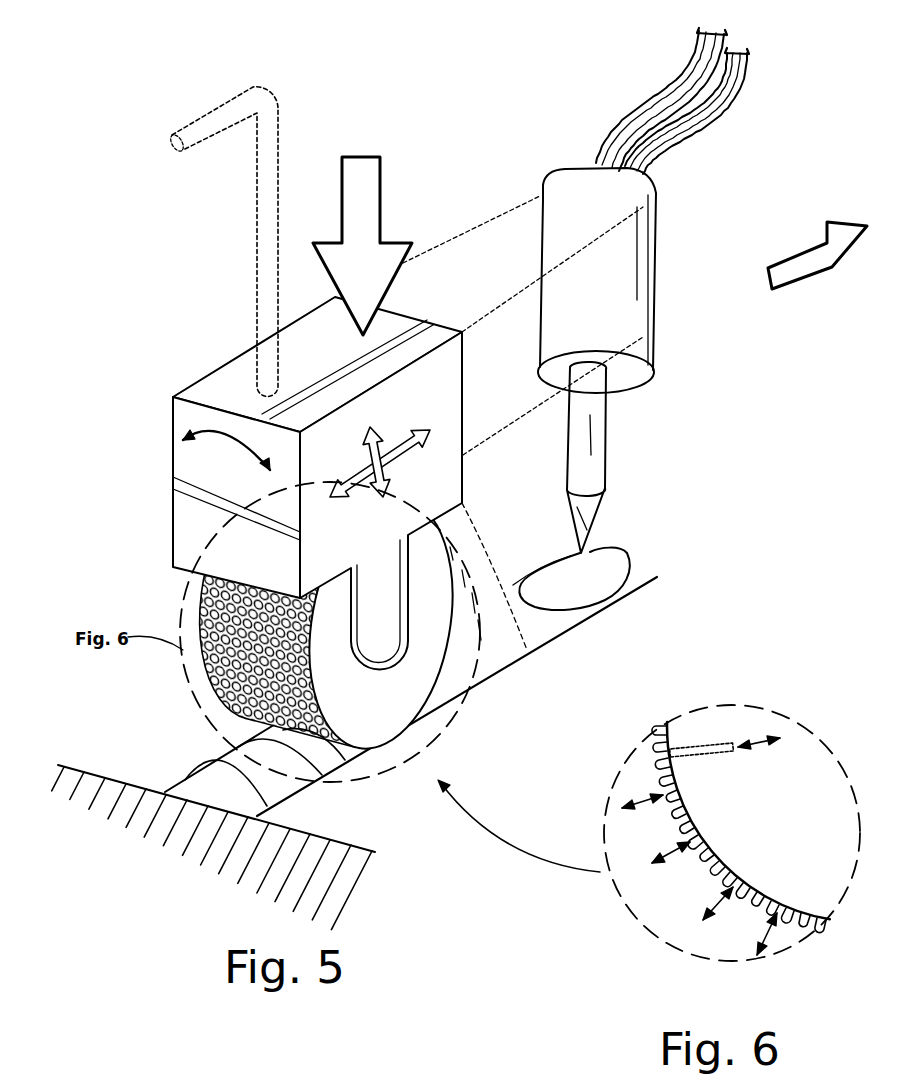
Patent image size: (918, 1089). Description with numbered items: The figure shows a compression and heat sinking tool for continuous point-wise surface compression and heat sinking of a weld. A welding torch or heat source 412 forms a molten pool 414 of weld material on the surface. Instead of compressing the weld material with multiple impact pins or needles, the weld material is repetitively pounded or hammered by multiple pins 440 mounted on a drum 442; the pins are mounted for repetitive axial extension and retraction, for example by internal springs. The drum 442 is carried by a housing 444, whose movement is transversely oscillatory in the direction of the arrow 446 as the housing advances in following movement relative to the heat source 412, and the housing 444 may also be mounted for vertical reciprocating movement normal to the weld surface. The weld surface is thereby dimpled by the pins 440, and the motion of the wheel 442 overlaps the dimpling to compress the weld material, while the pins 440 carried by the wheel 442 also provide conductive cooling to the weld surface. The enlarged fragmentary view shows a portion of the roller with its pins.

In FIG. 5, the welding torch or heat source 412 is at (640, 280).
In FIG. 5, the molten pool 414 is at (565, 600).
In FIG. 5, the pins 440 is at (205, 686).
In FIG. 6, the pins 440 is at (698, 856).
In FIG. 5, the drum 442 is at (383, 728).
In FIG. 6, the drum 442 is at (828, 872).
In FIG. 5, the housing 444 is at (188, 516).
In FIG. 5, the arrow 446 is at (172, 398).